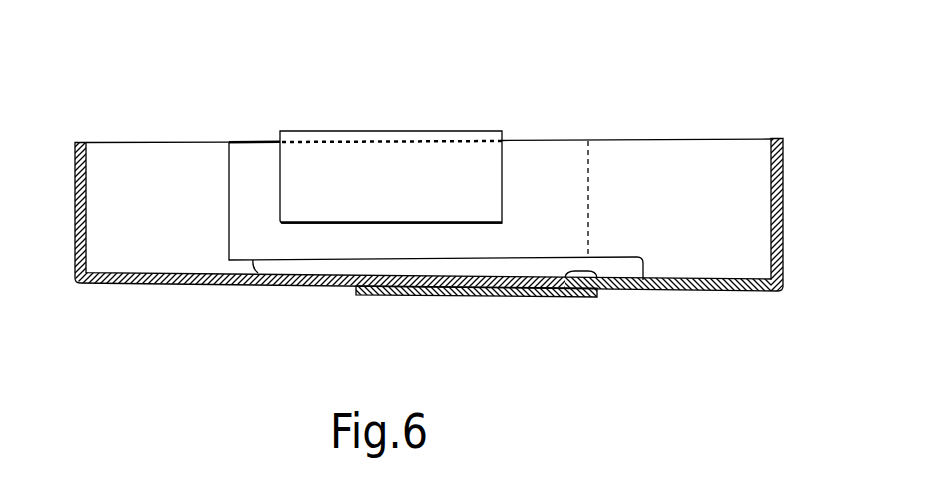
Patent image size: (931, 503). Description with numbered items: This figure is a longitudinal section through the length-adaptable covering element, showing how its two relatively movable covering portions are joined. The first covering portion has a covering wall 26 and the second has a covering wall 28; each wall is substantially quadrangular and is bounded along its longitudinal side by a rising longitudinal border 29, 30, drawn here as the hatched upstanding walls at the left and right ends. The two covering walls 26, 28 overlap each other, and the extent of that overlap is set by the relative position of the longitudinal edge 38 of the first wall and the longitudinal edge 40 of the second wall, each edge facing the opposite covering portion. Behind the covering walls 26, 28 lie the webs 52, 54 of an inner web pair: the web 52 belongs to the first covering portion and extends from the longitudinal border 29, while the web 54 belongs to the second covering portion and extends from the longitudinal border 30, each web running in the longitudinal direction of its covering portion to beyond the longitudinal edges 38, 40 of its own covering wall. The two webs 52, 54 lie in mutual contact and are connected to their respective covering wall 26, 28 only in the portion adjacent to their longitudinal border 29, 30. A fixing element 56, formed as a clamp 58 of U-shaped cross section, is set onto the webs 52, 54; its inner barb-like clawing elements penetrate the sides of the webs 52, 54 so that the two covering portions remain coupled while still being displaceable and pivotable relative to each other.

The covering wall 26 is at (160, 284).
The covering wall 28 is at (678, 291).
The longitudinal border 29 is at (75, 187).
The longitudinal border 30 is at (783, 179).
The longitudinal edge 38 is at (597, 292).
The longitudinal edge 40 is at (356, 289).
The web 52 is at (155, 167).
The web 54 is at (637, 165).
The fixing element 56 is at (408, 96).
The clamp 58 is at (311, 167).